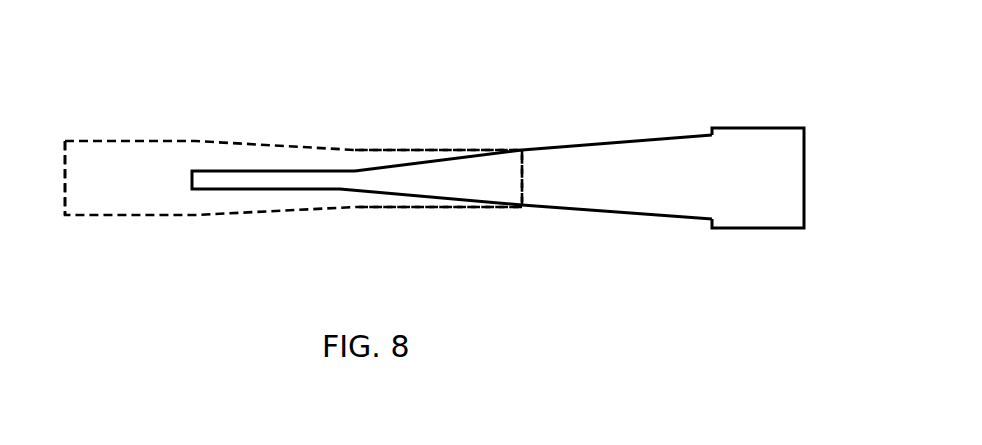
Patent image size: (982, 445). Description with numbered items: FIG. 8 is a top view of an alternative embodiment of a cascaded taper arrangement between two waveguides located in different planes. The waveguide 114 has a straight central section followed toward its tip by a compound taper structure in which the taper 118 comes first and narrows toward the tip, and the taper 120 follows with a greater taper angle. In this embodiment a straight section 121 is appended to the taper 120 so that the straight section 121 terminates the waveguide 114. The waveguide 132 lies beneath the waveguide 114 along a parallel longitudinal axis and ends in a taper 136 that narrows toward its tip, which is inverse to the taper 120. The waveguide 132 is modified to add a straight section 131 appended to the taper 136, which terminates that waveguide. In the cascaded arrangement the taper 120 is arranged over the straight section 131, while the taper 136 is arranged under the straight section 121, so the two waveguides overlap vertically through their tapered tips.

The waveguide 114 is at (751, 168).
The taper 118 is at (653, 219).
The taper 120 is at (415, 197).
The straight section 121 is at (288, 192).
The straight section 131 is at (427, 148).
The waveguide 132 is at (115, 182).
The taper 136 is at (282, 145).